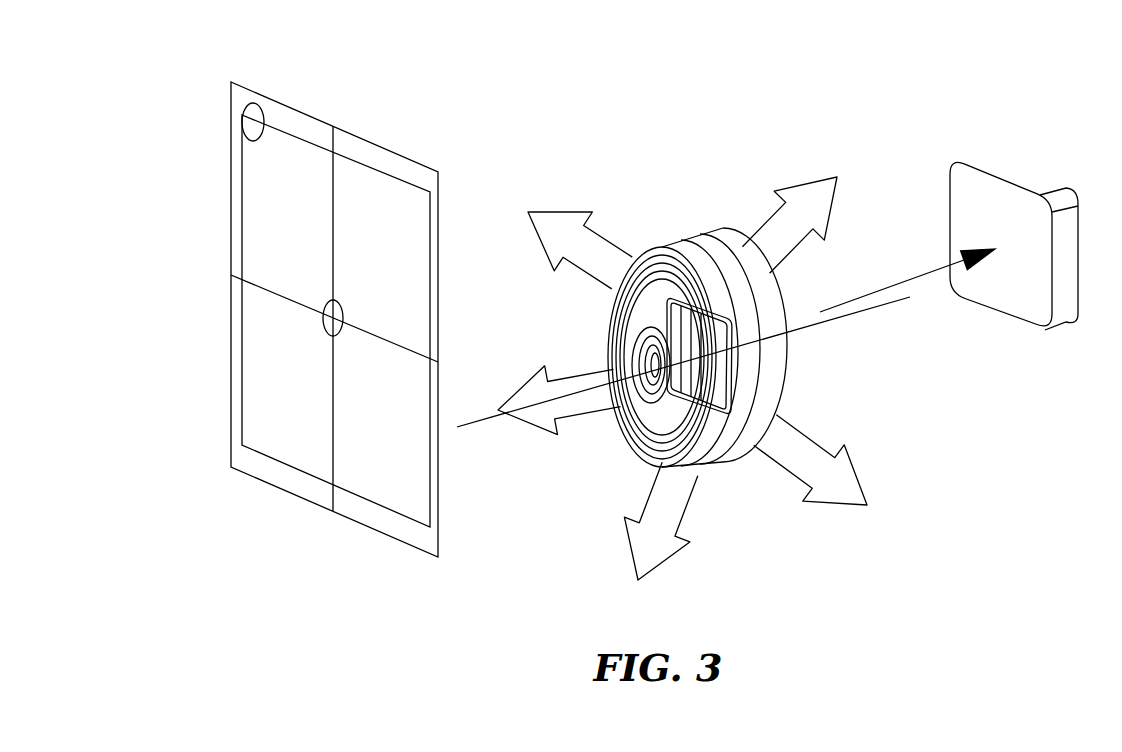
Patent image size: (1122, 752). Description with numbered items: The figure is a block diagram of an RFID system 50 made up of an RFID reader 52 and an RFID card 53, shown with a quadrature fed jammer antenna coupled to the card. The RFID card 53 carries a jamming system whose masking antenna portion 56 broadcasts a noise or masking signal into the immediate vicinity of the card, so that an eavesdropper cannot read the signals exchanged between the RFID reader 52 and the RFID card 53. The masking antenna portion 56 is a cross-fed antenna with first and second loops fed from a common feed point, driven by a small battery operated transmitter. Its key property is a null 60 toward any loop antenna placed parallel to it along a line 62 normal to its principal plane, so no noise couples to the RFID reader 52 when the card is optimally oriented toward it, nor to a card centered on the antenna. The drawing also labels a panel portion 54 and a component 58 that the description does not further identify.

The RFID system 50 is at (836, 113).
The RFID reader 52 is at (1013, 173).
The RFID card 53 is at (323, 314).
The target panel 54 is at (418, 487).
The masking antenna portion 56 is at (386, 150).
The light source 58 is at (698, 226).
The null 60 is at (875, 290).
The line normal to principal plane 62 is at (478, 418).